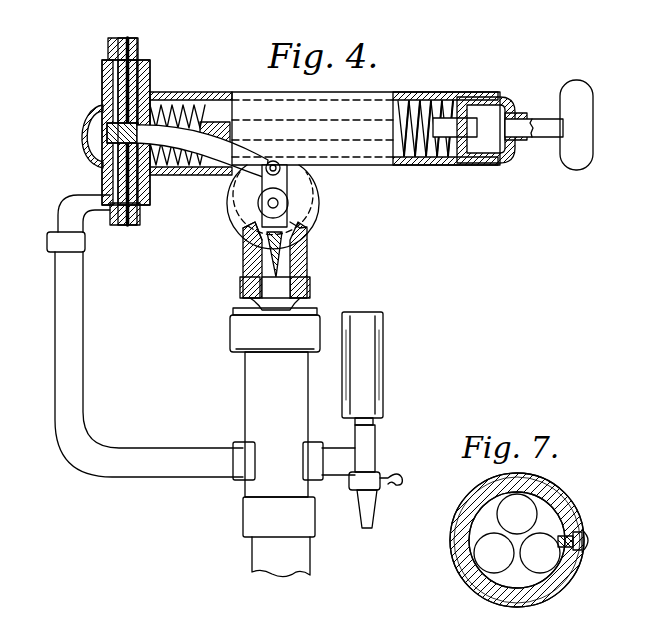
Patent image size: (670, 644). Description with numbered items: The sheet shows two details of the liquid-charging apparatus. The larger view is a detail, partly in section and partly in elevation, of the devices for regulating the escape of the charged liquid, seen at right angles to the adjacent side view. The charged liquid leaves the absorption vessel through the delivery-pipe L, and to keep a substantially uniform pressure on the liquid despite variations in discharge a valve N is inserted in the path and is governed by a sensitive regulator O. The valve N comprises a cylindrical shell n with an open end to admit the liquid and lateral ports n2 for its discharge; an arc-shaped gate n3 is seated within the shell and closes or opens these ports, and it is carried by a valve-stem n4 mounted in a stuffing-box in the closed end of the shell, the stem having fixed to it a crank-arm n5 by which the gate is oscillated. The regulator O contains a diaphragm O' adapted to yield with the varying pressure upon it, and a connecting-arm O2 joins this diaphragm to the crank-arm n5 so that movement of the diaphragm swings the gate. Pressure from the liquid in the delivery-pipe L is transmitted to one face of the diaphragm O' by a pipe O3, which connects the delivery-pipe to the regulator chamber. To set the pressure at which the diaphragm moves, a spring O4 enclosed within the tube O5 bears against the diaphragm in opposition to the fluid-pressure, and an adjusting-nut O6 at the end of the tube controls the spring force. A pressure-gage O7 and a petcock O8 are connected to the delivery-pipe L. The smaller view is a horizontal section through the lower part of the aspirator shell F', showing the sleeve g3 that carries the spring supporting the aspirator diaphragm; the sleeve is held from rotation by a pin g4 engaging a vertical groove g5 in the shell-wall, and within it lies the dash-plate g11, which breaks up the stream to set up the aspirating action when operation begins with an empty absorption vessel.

In FIG. 4, the regulator O is at (145, 135).
In FIG. 4, the diaphragm O' is at (104, 131).
In FIG. 4, the connecting-arm O2 is at (222, 157).
In FIG. 4, the pipe O3 is at (72, 338).
In FIG. 4, the spring O4 is at (402, 110).
In FIG. 4, the tube O5 is at (265, 110).
In FIG. 4, the adjusting-nut O6 is at (503, 158).
In FIG. 4, the pressure-gage O7 is at (370, 352).
In FIG. 4, the petcock O8 is at (358, 486).
In FIG. 4, the valve N is at (320, 207).
In FIG. 4, the cylindrical shell n is at (300, 228).
In FIG. 4, the lateral ports n2 is at (262, 250).
In FIG. 4, the arc-shaped gate n3 is at (243, 230).
In FIG. 4, the valve-stem n4 is at (276, 203).
In FIG. 4, the crank-arm n5 is at (283, 178).
In FIG. 4, the delivery-pipe L is at (260, 397).
In FIG. 7, the shell F' is at (517, 545).
In FIG. 7, the sleeve g3 is at (460, 566).
In FIG. 7, the pin g4 is at (576, 530).
In FIG. 7, the vertical groove g5 is at (579, 553).
In FIG. 7, the dash-plate g11 is at (490, 527).